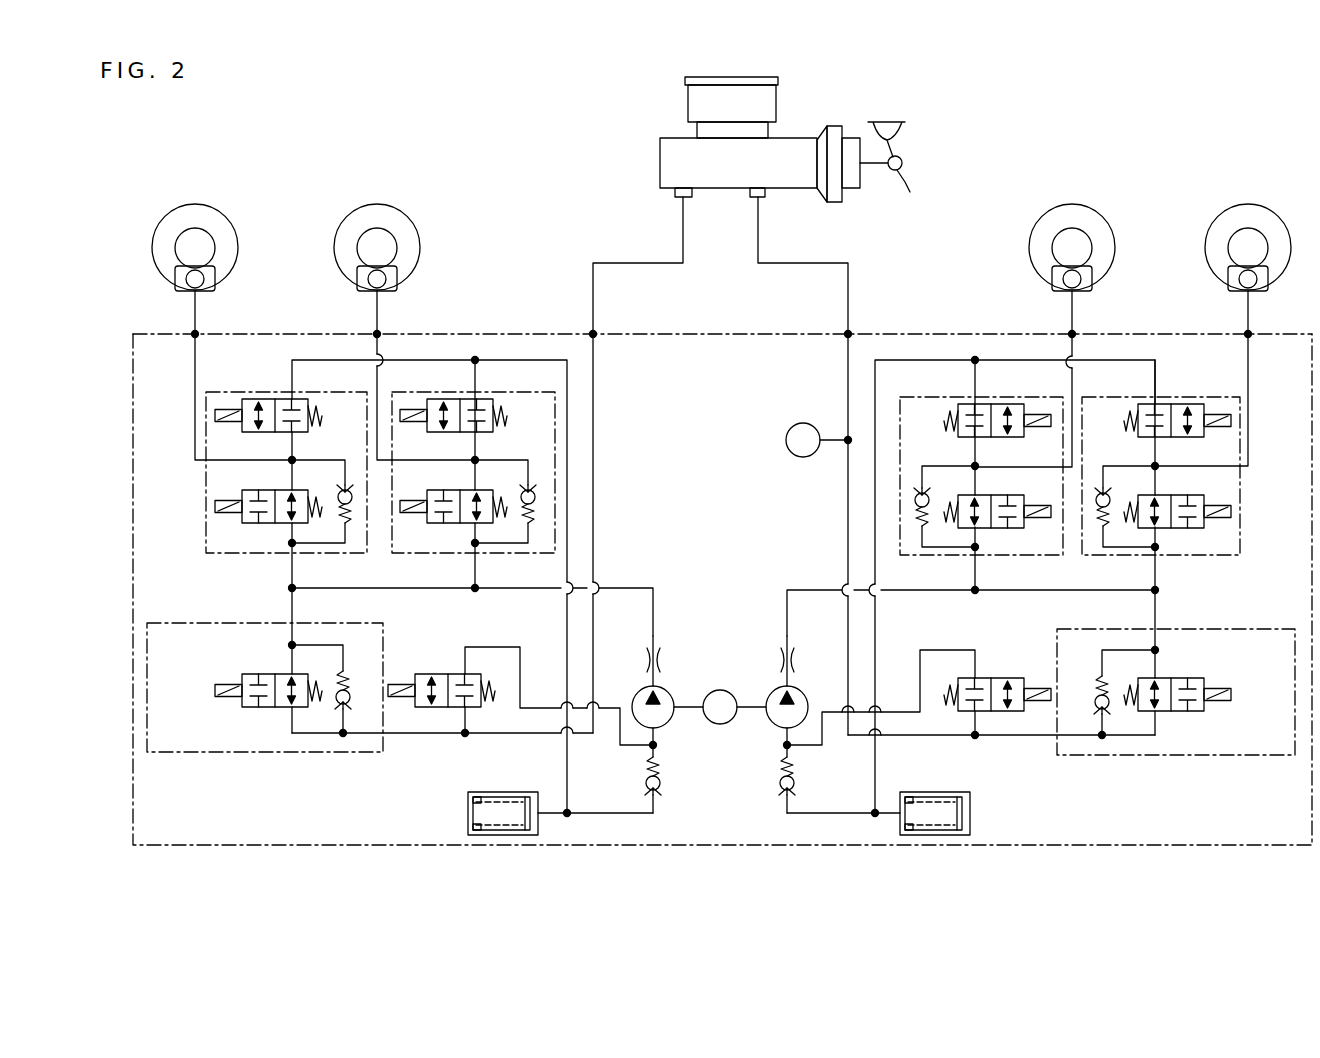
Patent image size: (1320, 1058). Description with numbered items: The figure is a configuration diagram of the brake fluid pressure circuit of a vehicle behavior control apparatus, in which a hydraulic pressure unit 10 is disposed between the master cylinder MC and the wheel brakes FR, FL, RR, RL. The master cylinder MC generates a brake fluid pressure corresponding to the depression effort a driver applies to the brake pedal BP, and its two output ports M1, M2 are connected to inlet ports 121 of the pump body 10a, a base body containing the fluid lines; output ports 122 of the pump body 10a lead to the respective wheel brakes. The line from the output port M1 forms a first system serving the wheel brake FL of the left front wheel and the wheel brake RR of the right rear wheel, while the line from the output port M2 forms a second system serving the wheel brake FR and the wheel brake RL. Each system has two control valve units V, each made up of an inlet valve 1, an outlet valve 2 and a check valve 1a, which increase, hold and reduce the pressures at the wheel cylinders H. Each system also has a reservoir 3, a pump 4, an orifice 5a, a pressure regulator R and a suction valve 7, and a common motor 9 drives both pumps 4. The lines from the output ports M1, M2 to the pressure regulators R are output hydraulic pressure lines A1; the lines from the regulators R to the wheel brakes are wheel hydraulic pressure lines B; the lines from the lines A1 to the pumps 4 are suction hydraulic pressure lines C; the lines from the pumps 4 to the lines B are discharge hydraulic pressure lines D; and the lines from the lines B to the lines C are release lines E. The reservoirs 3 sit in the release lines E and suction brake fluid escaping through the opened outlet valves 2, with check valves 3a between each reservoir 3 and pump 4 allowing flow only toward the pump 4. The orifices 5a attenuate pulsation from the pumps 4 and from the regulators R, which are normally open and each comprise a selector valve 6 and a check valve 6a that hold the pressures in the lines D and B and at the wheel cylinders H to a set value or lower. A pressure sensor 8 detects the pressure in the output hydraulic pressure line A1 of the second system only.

The inlet valve 1 is at (256, 523).
The check valve 1a is at (347, 485).
The outlet valve 2 is at (292, 399).
The reservoir 3 is at (455, 825).
The check valve 3a is at (662, 781).
The pump 4 is at (672, 725).
The orifice 5a is at (662, 668).
The selector valve 6 is at (252, 708).
The check valve 6a is at (352, 692).
The suction valve 7 is at (415, 676).
The pressure sensor 8 is at (786, 443).
The motor 9 is at (720, 690).
The hydraulic pressure unit 10 is at (921, 320).
The pump body 10a is at (311, 845).
The inlet port 121 is at (592, 333).
The output port 122 is at (198, 333).
The master cylinder MC is at (660, 160).
The brake pedal BP is at (918, 200).
The output port M1 is at (668, 200).
The output port M2 is at (770, 200).
The wheel brake FL is at (194, 200).
The wheel brake FR is at (1249, 200).
The wheel brake RL is at (1073, 200).
The wheel brake RR is at (376, 200).
The wheel cylinder H is at (203, 279).
The release line E is at (478, 358).
The wheel hydraulic pressure line B is at (200, 360).
The control valve unit V is at (206, 478).
The output hydraulic pressure line A1 is at (594, 404).
The suction hydraulic pressure line C is at (530, 716).
The discharge hydraulic pressure line D is at (622, 588).
The pressure regulator R is at (185, 755).